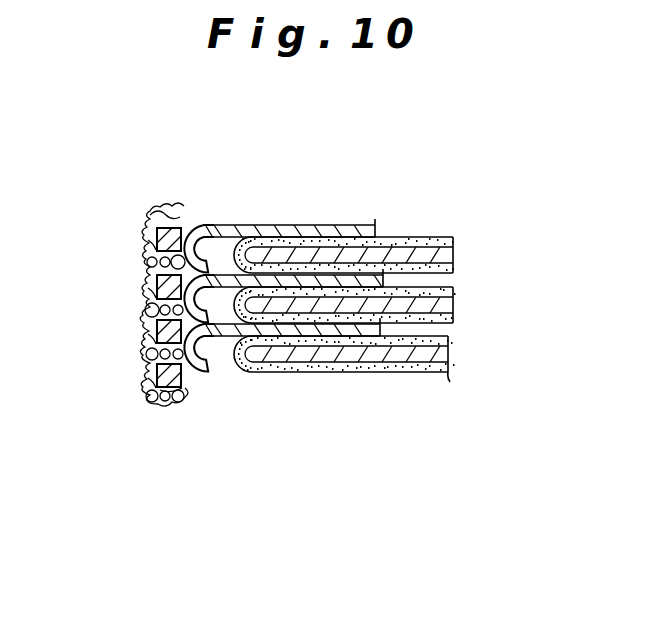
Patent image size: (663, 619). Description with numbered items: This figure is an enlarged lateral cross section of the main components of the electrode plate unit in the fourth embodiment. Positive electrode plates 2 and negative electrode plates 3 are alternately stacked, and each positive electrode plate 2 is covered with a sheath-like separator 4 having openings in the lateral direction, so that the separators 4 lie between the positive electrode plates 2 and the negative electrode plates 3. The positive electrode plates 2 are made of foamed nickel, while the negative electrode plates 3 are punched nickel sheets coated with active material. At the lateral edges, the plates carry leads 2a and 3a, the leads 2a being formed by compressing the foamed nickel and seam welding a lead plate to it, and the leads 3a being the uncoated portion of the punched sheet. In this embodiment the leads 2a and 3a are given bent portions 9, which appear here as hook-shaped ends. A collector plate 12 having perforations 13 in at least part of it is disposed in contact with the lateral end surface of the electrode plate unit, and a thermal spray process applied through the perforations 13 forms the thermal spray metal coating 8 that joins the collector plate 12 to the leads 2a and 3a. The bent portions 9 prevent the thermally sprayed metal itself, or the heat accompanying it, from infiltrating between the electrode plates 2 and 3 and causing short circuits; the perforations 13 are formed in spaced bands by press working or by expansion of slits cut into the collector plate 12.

The lead 2a is at (222, 280).
The lead 3a is at (246, 252).
The positive electrode plate 2 is at (315, 280).
The negative electrode plate 3 is at (385, 303).
The separator 4 is at (453, 286).
The thermal spray metal coating 8 is at (150, 310).
The bent portion 9 is at (155, 263).
The collector plate 12 is at (185, 398).
The perforations 13 is at (146, 364).